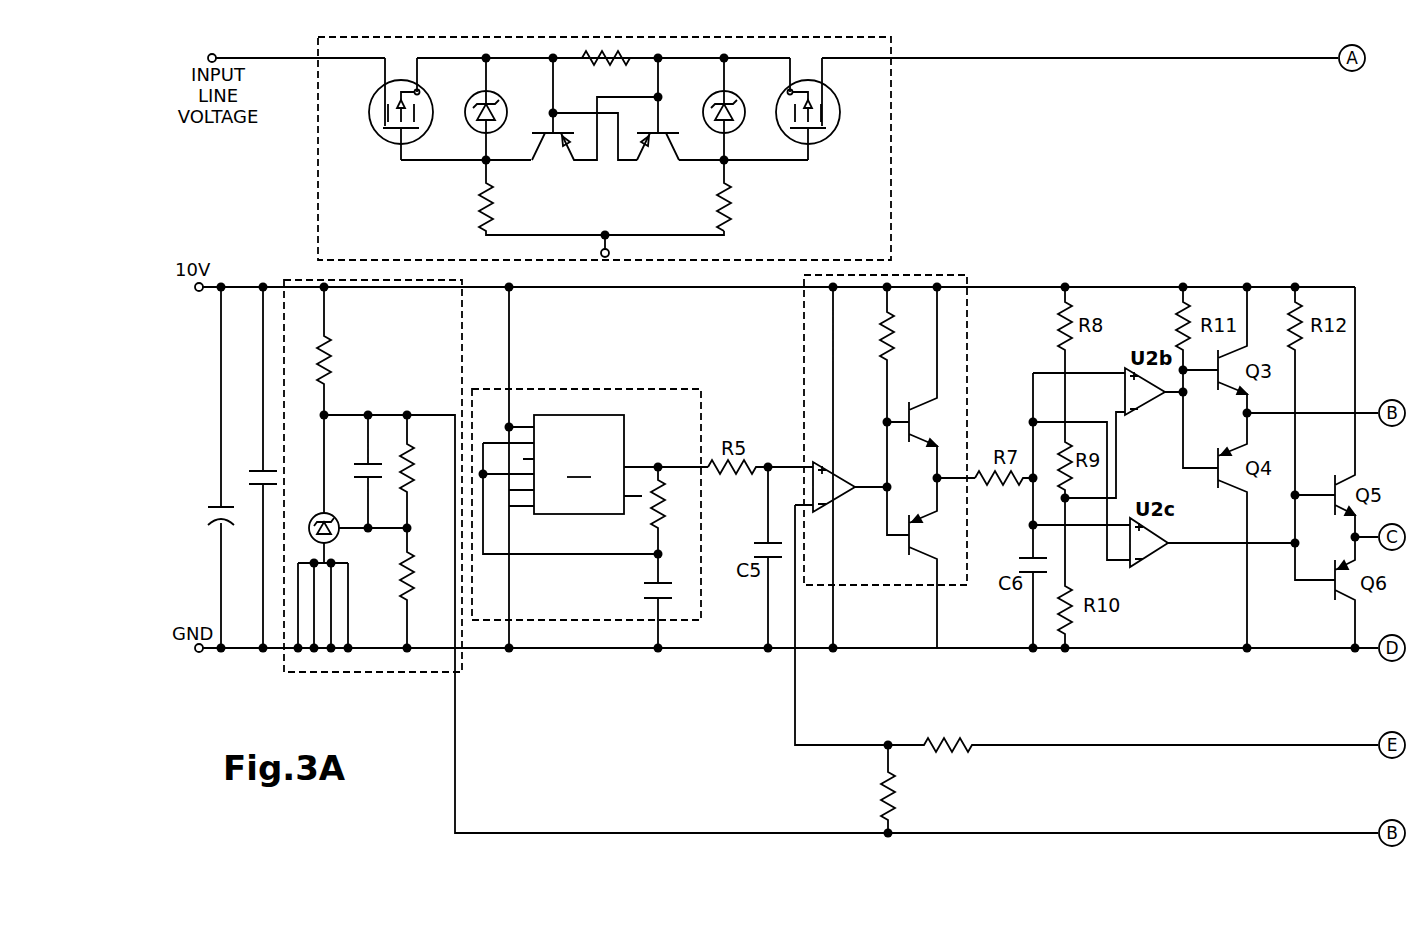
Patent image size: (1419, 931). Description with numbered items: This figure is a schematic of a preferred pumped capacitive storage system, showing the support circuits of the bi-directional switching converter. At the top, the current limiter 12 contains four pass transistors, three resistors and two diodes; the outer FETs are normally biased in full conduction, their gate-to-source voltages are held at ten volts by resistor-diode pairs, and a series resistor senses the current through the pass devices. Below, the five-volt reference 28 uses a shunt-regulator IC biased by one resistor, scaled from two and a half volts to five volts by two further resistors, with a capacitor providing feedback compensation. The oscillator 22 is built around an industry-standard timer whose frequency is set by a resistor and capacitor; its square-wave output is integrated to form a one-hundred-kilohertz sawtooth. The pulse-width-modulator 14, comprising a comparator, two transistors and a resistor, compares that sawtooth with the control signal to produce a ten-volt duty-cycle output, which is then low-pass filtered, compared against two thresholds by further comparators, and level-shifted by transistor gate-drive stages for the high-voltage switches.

The current limiter 12 is at (891, 203).
The pulse-width-modulator 14 is at (967, 385).
The oscillator 22 is at (616, 389).
The 5V reference 28 is at (383, 672).